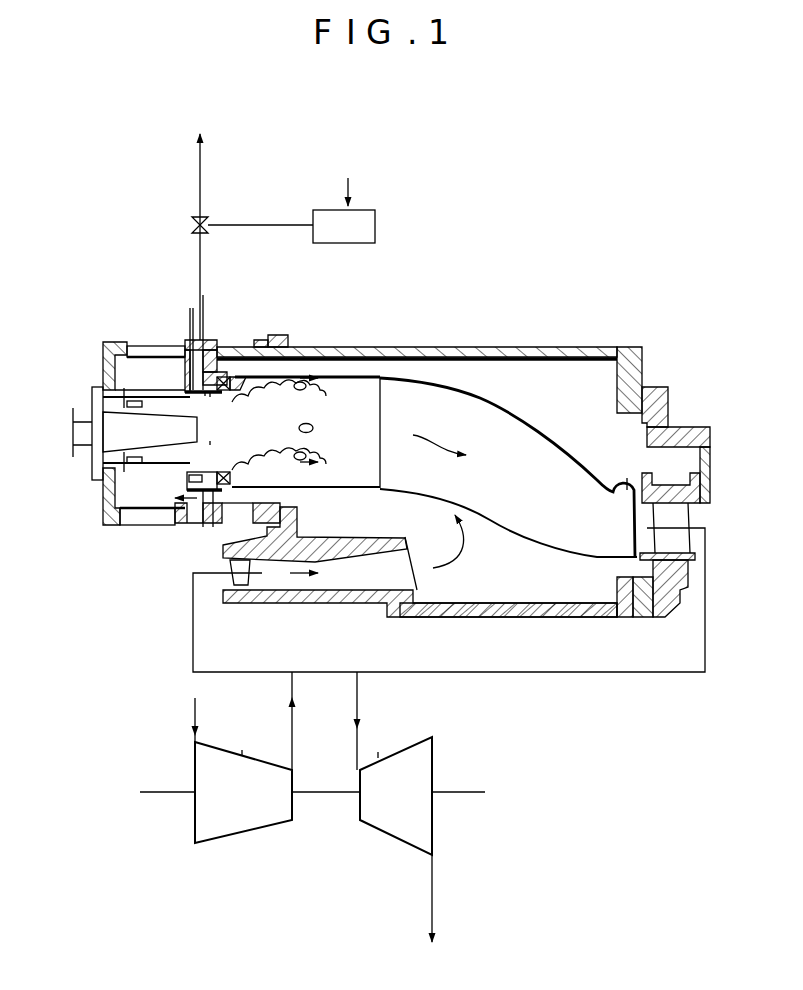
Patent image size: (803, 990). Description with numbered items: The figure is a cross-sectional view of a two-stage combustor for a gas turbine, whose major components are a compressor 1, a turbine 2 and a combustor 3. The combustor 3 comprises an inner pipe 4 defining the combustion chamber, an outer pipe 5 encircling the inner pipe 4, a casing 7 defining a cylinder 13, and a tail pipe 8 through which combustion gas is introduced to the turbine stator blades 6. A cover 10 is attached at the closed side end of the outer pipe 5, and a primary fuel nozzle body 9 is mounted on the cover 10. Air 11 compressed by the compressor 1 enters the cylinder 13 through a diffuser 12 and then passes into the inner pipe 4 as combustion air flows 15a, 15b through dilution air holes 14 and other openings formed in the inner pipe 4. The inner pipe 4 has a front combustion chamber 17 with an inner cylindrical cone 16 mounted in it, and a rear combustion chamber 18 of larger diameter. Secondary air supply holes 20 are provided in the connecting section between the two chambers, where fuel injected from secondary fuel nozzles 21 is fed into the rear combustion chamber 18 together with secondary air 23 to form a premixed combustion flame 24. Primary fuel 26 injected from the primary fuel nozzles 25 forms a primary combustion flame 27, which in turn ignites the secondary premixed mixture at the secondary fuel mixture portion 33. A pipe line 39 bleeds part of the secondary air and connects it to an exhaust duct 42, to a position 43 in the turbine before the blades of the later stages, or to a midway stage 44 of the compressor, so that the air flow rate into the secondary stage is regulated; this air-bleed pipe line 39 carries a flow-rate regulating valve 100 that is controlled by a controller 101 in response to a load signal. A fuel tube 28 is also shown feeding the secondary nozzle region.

The compressor 1 is at (249, 811).
The turbine 2 is at (402, 811).
The combustor 3 is at (350, 282).
The inner pipe 4 is at (316, 375).
The outer pipe 5 is at (199, 340).
The turbine stator blades 6 is at (680, 518).
The casing 7 is at (492, 348).
The tail pipe 8 is at (493, 522).
The primary fuel nozzle body 9 is at (100, 392).
The cover 10 is at (103, 352).
The air 11 is at (193, 636).
The diffuser 12 is at (378, 590).
The cylinder 13 is at (592, 410).
The dilution air holes 14 is at (314, 428).
The combustion air flow 15a is at (173, 403).
The combustion air flow 15b is at (305, 388).
The inner cylindrical cone 16 is at (150, 430).
The front combustion chamber 17 is at (214, 428).
The rear combustion chamber 18 is at (294, 442).
The secondary air supply holes 20 is at (214, 368).
The secondary fuel nozzles 21 is at (232, 374).
The secondary air 23 is at (242, 485).
The premixed combustion flame 24 is at (279, 427).
The primary fuel nozzles 25 is at (123, 490).
The primary fuel 26 is at (157, 462).
The primary combustion flame 27 is at (205, 396).
The fuel tube 28 is at (189, 306).
The secondary fuel mixture portion 33 is at (230, 375).
The pipe line 39 is at (205, 298).
The exhaust duct 42 is at (432, 893).
The position before the turbine blades 43 is at (379, 753).
The midway stage of the compressor 44 is at (243, 751).
The flow-rate regulating valve 100 is at (204, 222).
The controller 101 is at (376, 222).